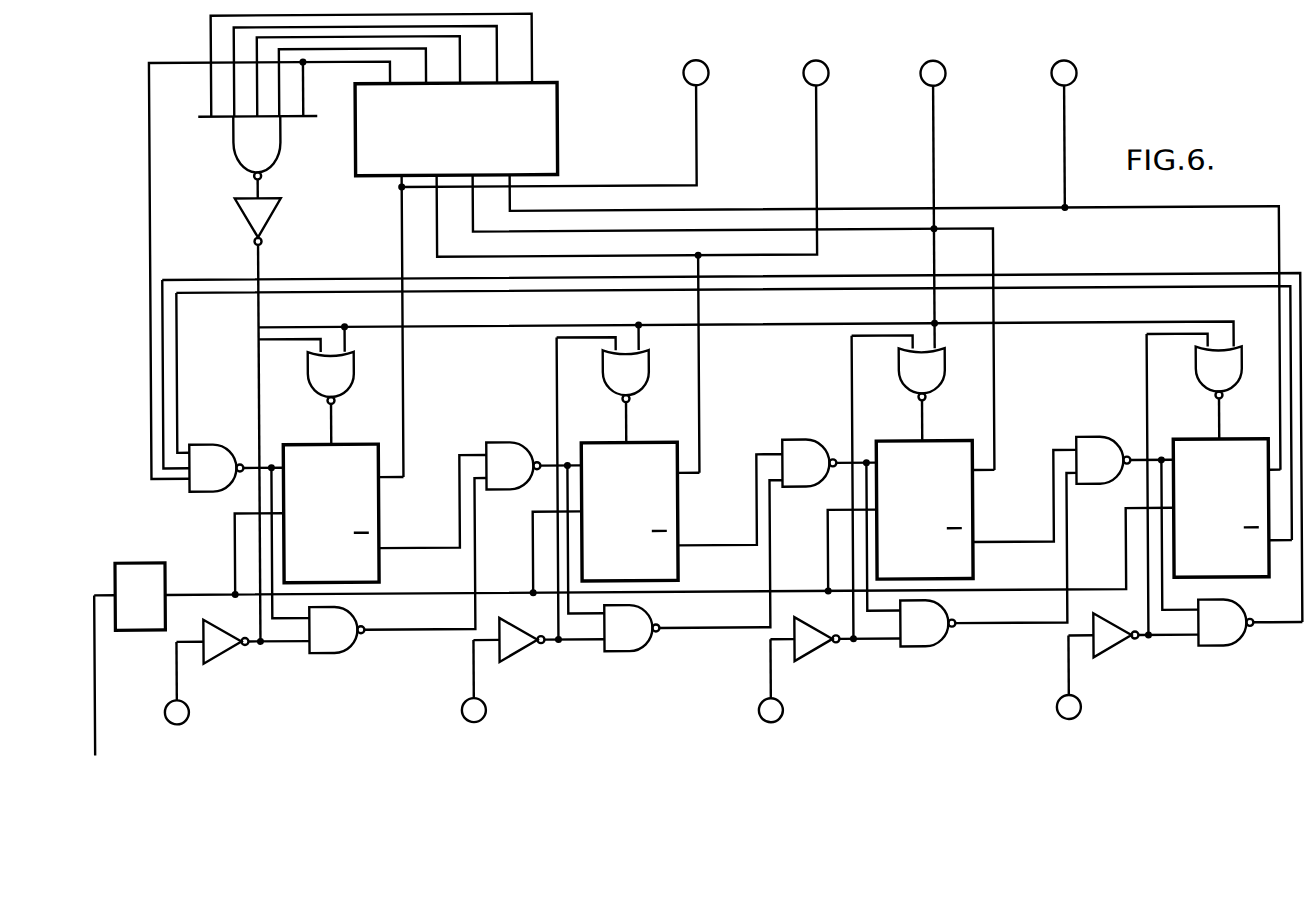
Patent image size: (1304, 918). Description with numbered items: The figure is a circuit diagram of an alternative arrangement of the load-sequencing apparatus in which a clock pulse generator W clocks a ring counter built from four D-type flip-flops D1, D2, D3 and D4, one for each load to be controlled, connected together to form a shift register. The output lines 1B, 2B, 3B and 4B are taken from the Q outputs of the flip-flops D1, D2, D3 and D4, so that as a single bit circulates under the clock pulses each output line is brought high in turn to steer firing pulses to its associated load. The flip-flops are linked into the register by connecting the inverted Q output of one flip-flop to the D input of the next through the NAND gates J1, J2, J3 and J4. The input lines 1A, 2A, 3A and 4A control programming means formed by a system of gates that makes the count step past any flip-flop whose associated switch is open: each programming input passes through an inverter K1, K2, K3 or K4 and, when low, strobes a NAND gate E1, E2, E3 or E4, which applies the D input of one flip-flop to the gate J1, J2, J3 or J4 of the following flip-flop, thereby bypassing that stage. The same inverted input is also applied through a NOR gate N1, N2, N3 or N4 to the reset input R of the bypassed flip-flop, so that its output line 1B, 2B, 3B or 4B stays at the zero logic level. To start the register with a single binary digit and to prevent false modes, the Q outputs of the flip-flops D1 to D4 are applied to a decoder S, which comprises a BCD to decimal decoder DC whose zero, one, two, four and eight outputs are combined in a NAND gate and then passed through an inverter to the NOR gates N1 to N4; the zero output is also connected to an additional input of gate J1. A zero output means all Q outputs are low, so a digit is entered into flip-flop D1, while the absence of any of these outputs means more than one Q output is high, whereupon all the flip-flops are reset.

The BCD to decimal decoder DC is at (456, 129).
The decoder S is at (319, 174).
The clock pulse generator W is at (140, 596).
The NOR gate N1 is at (353, 398).
The NOR gate N2 is at (649, 396).
The NOR gate N3 is at (943, 394).
The NOR gate N4 is at (1200, 392).
The NAND gate J1 is at (249, 531).
The NAND gate J2 is at (545, 528).
The NAND gate J3 is at (841, 525).
The NAND gate J4 is at (1137, 523).
The D-type flip-flop D1 is at (331, 513).
The D-type flip-flop D2 is at (629, 511).
The D-type flip-flop D3 is at (924, 510).
The D-type flip-flop D4 is at (1221, 508).
The NAND gate E1 is at (397, 565).
The NAND gate E2 is at (693, 565).
The NAND gate E3 is at (988, 560).
The NAND gate E4 is at (1250, 622).
The inverter K1 is at (212, 650).
The inverter K2 is at (508, 650).
The inverter K3 is at (803, 651).
The inverter K4 is at (1102, 649).
The input line 1A is at (190, 699).
The input line 2A is at (487, 698).
The input line 3A is at (784, 700).
The input line 4A is at (1082, 699).
The output line 1B is at (716, 59).
The output line 2B is at (836, 60).
The output line 3B is at (953, 61).
The output line 4B is at (1084, 62).